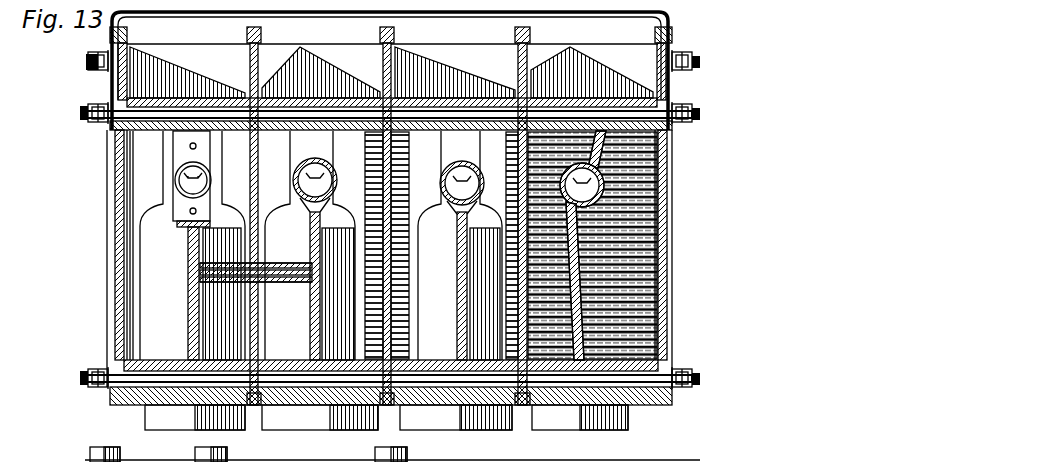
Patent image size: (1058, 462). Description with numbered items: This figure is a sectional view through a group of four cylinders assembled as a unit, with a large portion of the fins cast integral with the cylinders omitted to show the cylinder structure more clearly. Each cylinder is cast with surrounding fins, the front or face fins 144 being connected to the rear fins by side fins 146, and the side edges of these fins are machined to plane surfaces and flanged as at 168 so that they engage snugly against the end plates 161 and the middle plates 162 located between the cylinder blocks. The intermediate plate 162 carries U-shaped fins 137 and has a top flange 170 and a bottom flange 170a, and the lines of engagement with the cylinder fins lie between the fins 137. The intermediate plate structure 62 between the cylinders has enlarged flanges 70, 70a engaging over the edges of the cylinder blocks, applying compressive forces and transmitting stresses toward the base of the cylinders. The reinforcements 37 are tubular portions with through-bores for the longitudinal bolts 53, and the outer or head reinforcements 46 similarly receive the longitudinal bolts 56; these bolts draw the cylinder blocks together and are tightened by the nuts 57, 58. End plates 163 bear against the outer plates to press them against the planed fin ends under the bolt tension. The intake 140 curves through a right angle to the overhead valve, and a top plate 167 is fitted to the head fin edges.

The flange 168 is at (127, 33).
The top flange 170 is at (261, 33).
The bottom flange 170a is at (252, 405).
The flange 70 is at (530, 33).
The inner flange 70a is at (522, 405).
The intermediate plate structure 62 is at (518, 68).
The nut 57 is at (690, 56).
The longitudinal bolt 56 is at (86, 60).
The nut 58 is at (96, 74).
The head reinforcement 46 is at (213, 98).
The intake 140 is at (329, 181).
The middle plate 162 is at (325, 245).
The fins 137 is at (368, 160).
The end plate 161 is at (141, 270).
The end plate 163 is at (117, 258).
The front fin 144 is at (287, 262).
The side fin 146 is at (262, 298).
The longitudinal bolt 53 is at (170, 362).
The reinforcement 37 is at (165, 396).
The top plate 167 is at (294, 460).